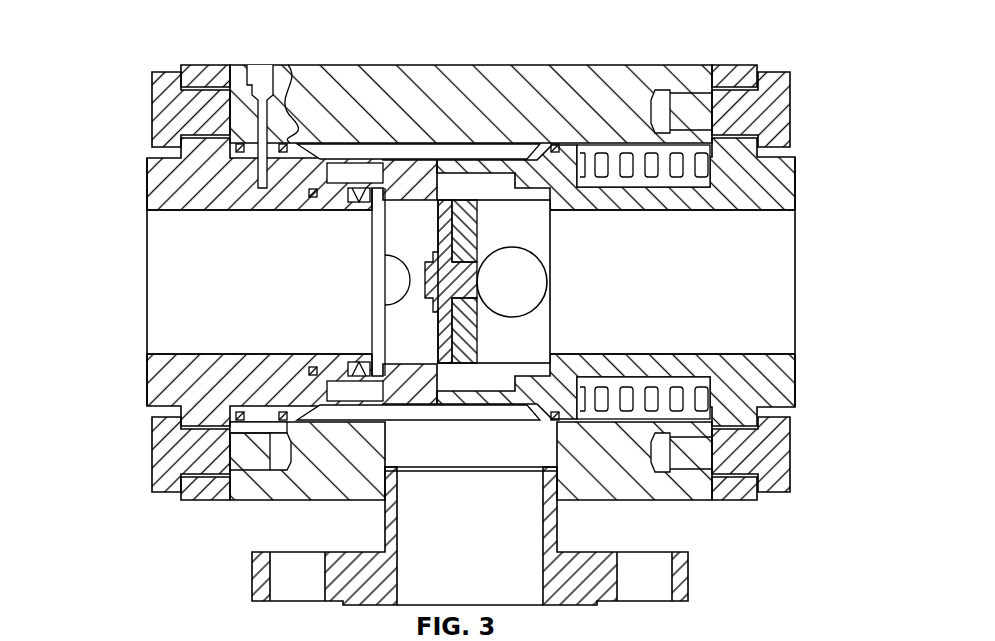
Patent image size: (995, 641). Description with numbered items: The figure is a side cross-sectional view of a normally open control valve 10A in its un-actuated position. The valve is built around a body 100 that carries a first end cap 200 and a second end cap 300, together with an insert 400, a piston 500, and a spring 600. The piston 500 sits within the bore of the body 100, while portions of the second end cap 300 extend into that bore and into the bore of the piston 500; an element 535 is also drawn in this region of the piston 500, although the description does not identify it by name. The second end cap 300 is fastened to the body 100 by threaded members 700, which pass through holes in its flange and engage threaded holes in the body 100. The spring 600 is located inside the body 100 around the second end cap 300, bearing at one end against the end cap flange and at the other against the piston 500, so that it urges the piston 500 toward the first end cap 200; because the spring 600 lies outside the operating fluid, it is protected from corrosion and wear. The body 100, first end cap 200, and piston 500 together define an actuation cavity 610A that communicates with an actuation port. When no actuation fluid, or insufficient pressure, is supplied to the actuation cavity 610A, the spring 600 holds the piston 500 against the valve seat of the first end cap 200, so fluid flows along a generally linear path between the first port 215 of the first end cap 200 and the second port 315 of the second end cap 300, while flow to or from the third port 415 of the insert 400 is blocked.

The control valve 10A is at (128, 55).
The body 100 is at (402, 60).
The first end cap 200 is at (145, 192).
The first port 215 is at (282, 293).
The second end cap 300 is at (800, 178).
The second port 315 is at (696, 293).
The insert 400 is at (587, 552).
The third port 415 is at (496, 548).
The piston 500 is at (522, 148).
The seal 535 is at (500, 153).
The spring 600 is at (622, 170).
The actuation cavity 610A is at (262, 190).
The threaded members 700 is at (152, 112).